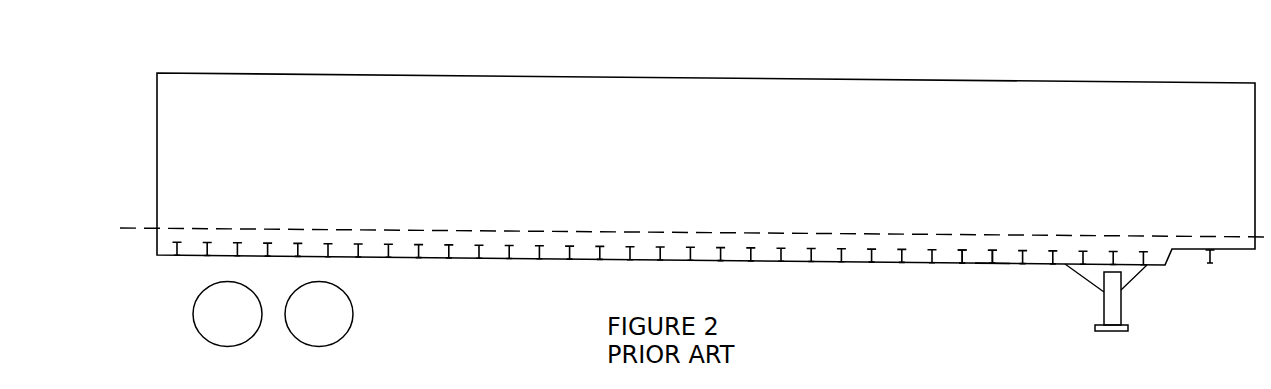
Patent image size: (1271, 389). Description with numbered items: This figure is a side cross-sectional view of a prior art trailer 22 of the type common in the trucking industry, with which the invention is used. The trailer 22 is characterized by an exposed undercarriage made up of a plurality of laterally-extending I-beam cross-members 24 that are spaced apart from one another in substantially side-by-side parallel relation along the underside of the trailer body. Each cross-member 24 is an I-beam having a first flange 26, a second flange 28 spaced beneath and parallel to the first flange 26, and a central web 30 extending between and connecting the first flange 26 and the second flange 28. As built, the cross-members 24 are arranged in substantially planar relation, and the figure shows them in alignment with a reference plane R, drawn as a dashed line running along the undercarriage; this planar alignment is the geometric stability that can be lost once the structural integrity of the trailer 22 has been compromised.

The trailer 22 is at (738, 78).
The reference plane R is at (150, 228).
The I-beam cross-members 24 is at (329, 255).
The first flange 26 is at (993, 243).
The second flange 28 is at (993, 265).
The central web 30 is at (958, 258).